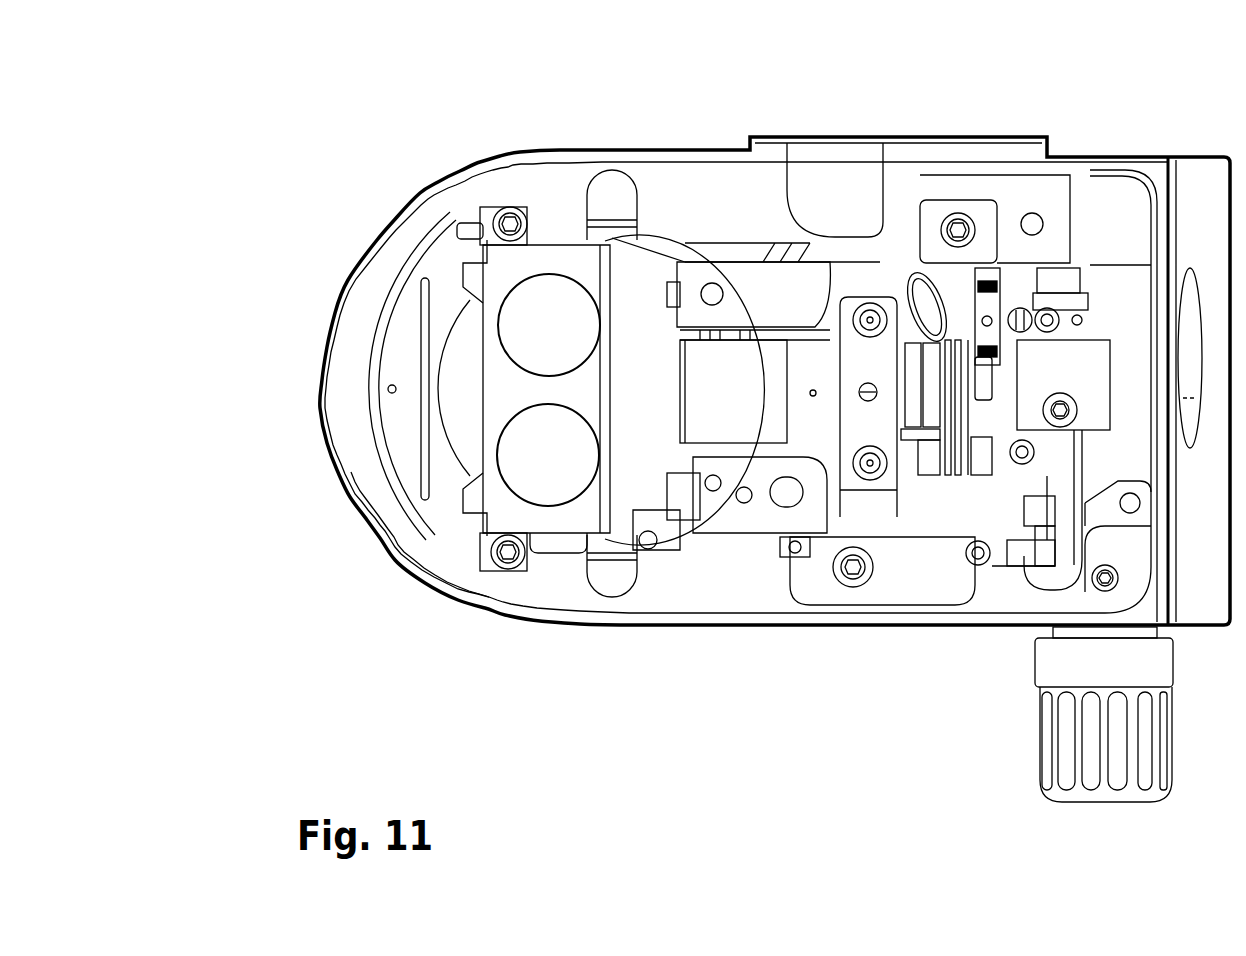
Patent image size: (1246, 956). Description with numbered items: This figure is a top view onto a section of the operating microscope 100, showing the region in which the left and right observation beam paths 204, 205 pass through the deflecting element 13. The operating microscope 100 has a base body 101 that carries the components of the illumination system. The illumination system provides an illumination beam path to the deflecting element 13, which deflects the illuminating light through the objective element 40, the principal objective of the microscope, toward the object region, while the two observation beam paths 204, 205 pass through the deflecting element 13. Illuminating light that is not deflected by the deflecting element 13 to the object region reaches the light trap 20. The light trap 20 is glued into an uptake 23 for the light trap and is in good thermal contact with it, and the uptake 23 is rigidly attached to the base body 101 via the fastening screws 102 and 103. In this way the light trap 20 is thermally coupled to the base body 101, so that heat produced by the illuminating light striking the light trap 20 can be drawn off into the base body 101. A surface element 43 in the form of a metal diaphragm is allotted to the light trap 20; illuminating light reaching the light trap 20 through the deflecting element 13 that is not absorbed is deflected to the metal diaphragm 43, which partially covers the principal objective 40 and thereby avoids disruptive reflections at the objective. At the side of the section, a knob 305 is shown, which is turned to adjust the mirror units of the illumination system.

The operating microscope 100 is at (793, 653).
The base body 101 is at (918, 136).
The fastening screw 102 is at (508, 207).
The fastening screw 103 is at (507, 560).
The deflecting element 13 is at (553, 513).
The light trap 20 is at (458, 322).
The uptake for the light trap 23 is at (413, 430).
The objective element 40 is at (645, 335).
The surface element 43 is at (443, 503).
The left observation beam path 204 is at (549, 323).
The right observation beam path 205 is at (549, 455).
The knob 305 is at (1062, 748).